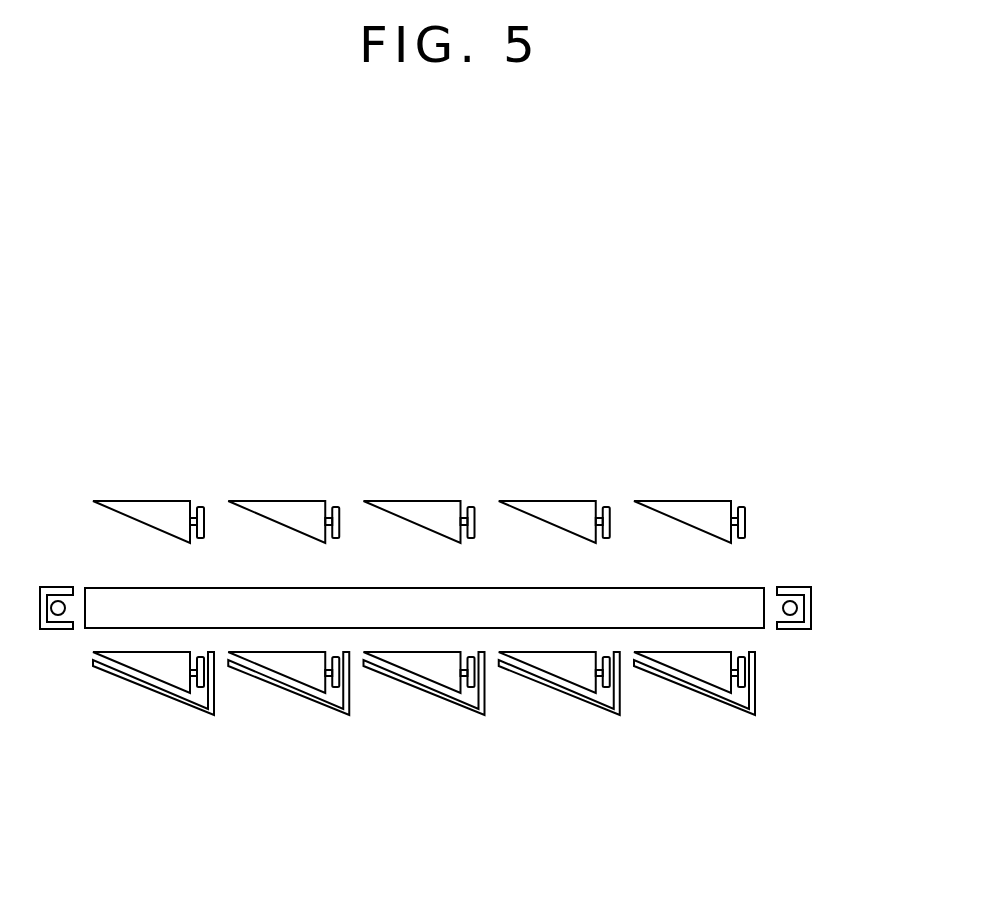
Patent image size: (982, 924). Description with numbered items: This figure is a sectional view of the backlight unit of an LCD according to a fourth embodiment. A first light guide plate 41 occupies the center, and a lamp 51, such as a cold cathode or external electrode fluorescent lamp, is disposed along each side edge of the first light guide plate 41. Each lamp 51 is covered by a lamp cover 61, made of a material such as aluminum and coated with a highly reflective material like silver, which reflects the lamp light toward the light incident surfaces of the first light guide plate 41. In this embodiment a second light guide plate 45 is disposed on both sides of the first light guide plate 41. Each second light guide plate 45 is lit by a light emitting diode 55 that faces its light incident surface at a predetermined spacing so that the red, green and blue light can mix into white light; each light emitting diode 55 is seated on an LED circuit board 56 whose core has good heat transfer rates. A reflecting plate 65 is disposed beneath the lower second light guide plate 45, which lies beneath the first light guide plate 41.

The first light guide plate 41 is at (100, 587).
The second light guide plate 45 is at (140, 500).
The lamp 51 is at (796, 610).
The light emitting diode 55 is at (193, 517).
The LED circuit board 56 is at (203, 506).
The lamp cover 61 is at (811, 593).
The reflecting plate 65 is at (193, 712).